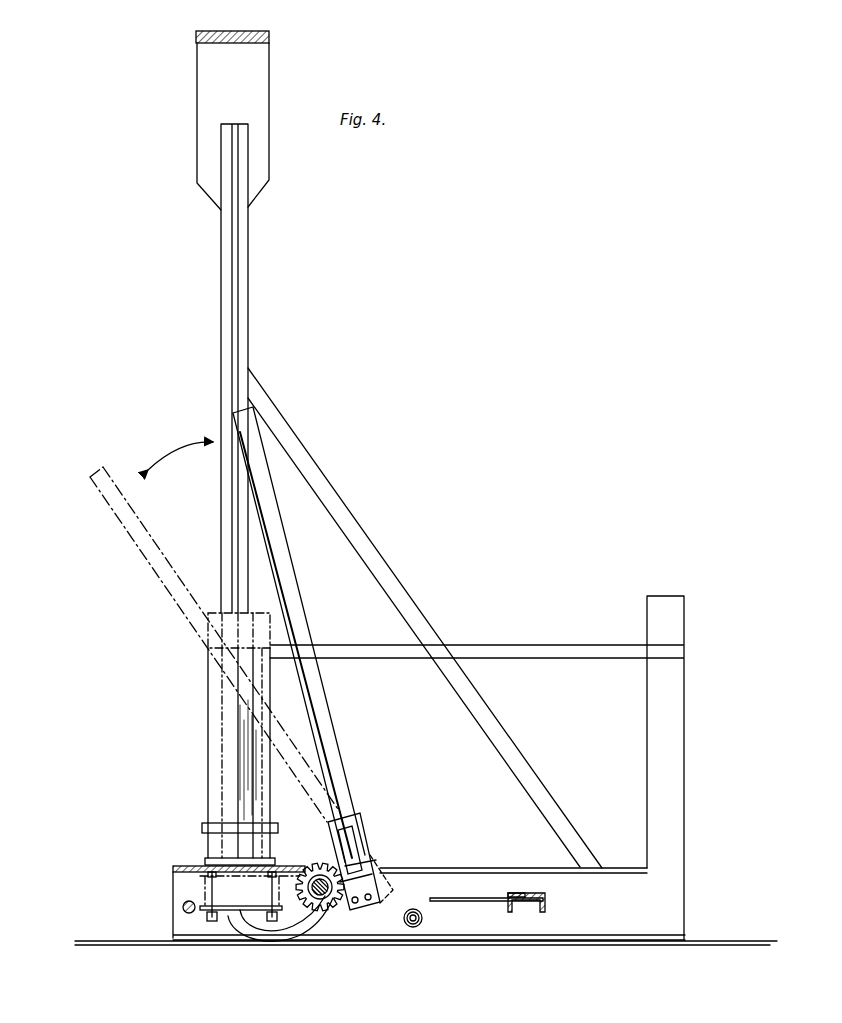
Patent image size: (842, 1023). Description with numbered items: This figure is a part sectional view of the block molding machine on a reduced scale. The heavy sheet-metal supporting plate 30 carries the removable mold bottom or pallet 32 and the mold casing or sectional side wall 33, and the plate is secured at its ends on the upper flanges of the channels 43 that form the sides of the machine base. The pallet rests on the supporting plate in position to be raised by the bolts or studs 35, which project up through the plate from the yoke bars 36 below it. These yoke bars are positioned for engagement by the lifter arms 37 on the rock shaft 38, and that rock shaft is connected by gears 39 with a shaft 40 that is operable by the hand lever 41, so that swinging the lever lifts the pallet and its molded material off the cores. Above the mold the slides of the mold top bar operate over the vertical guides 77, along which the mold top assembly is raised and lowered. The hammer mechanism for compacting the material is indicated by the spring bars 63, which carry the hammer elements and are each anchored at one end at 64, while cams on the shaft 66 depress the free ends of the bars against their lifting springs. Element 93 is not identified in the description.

The vertical guides 77 is at (250, 315).
The hand lever 41 is at (290, 580).
The mold casing or sectional side wall 33 is at (217, 613).
The removable mold bottom or pallet 32 is at (207, 853).
The supporting plate 30 is at (173, 868).
The bolts or studs 35 is at (210, 888).
The shaft 66 is at (184, 909).
The yoke bars 36 is at (225, 912).
The lifter arms 37 is at (258, 937).
The gear 93 is at (306, 864).
The gears 39 is at (368, 835).
The shaft 40 is at (384, 853).
The rock shaft 38 is at (330, 896).
The spring bars 63 is at (476, 898).
The anchorage 64 is at (547, 903).
The channels 43 is at (677, 898).